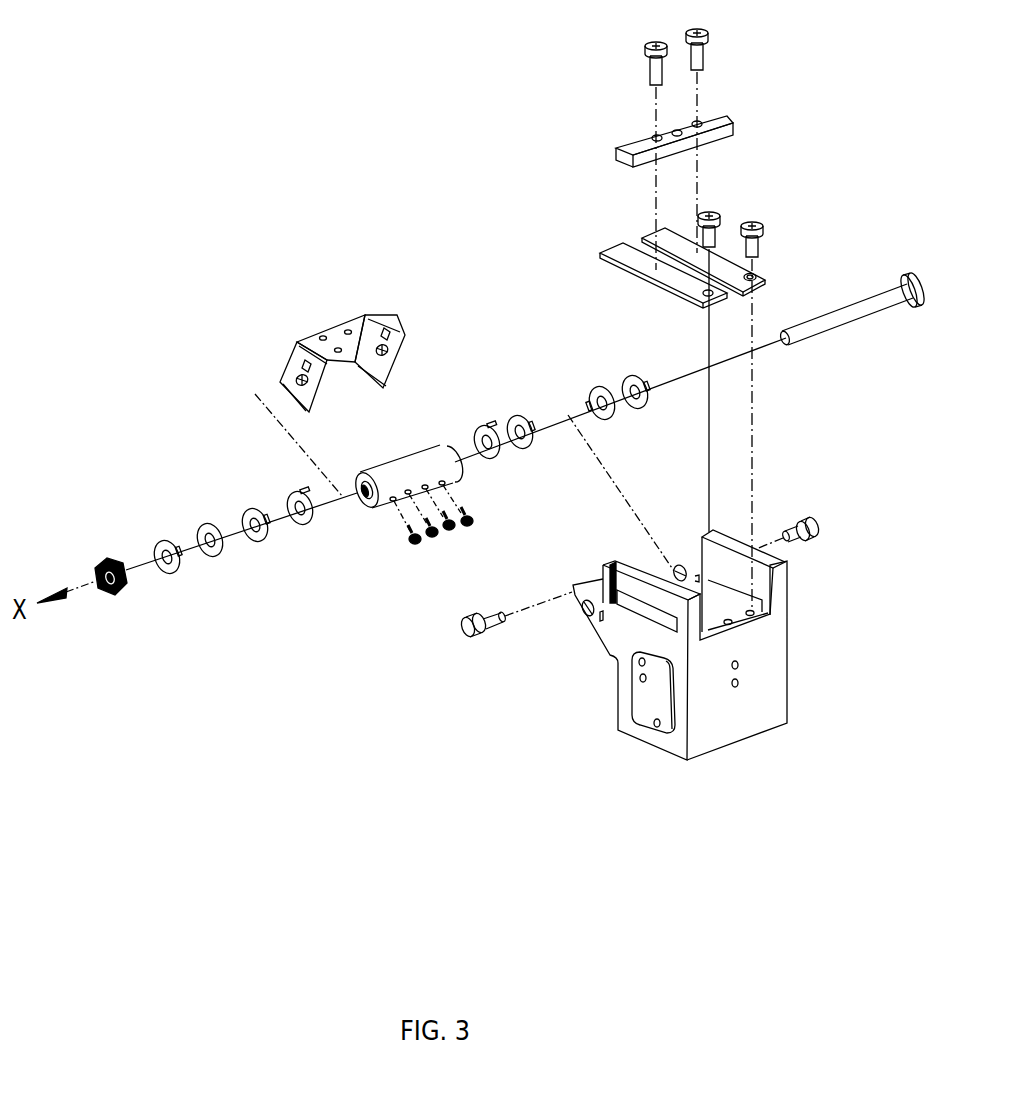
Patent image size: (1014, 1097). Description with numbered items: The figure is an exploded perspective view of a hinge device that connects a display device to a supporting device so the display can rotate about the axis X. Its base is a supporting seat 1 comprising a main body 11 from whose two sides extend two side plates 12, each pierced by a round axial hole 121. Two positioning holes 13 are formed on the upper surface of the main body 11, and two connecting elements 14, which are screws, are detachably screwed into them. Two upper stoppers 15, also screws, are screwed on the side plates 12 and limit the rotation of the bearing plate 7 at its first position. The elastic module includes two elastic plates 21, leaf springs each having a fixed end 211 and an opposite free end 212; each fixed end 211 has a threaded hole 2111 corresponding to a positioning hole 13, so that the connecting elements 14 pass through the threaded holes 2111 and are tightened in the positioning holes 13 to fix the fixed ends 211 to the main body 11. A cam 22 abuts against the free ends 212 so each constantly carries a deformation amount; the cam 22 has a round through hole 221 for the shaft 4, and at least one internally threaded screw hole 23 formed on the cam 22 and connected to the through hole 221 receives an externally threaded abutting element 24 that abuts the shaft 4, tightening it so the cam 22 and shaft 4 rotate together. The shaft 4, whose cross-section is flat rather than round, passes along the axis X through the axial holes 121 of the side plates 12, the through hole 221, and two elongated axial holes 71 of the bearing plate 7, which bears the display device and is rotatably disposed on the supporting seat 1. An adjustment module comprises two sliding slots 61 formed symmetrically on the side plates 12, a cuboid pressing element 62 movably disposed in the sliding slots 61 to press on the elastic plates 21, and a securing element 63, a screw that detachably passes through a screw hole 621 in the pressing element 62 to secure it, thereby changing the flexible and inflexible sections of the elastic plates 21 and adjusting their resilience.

The supporting seat 1 is at (680, 673).
The main body 11 is at (733, 722).
The side plates 12 is at (603, 637).
The axial hole 121 is at (582, 612).
The positioning holes 13 is at (757, 615).
The connecting elements 14 is at (762, 225).
The upper stoppers 15 is at (466, 627).
The elastic plates 21 is at (725, 258).
The fixed end 211 is at (767, 278).
The threaded hole 2111 is at (753, 276).
The free end 212 is at (600, 257).
The cam 22 is at (387, 470).
The through hole 221 is at (363, 508).
The screw hole 23 is at (446, 482).
The abutting element 24 is at (462, 522).
The shaft 4 is at (850, 312).
The sliding slots 61 is at (745, 590).
The pressing element 62 is at (733, 125).
The screw hole 621 is at (698, 120).
The securing element 63 is at (700, 53).
The bearing plate 7 is at (345, 320).
The axial holes 71 is at (388, 343).